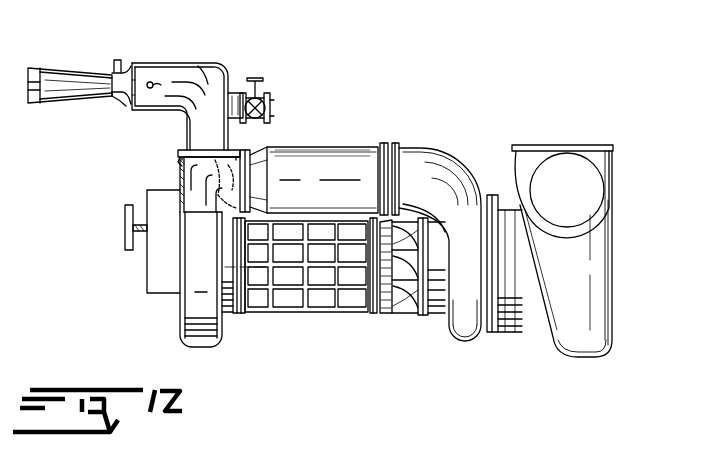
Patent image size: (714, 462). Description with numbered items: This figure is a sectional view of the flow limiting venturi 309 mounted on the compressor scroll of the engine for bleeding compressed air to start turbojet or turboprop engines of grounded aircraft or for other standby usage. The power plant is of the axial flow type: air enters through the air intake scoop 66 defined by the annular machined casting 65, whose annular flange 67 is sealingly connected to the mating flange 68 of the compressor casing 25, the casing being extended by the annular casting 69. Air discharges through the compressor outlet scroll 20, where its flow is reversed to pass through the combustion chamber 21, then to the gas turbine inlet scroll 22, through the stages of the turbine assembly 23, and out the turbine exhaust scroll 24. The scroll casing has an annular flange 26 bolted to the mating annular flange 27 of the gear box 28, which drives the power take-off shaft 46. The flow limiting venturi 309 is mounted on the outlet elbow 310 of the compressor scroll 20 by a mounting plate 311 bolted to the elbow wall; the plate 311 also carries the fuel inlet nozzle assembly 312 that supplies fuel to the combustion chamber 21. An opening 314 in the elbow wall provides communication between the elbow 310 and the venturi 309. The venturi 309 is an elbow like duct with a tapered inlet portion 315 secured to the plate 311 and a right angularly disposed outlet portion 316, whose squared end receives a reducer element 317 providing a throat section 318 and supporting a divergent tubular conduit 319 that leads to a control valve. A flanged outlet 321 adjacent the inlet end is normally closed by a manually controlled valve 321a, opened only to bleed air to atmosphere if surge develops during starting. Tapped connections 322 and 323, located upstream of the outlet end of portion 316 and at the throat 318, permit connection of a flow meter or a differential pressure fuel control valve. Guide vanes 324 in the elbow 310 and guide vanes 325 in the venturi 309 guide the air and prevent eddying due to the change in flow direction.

The divergent tubular conduit 319 is at (50, 66).
The tapped connection 323 is at (116, 69).
The throat section 318 is at (112, 104).
The reducer element 317 is at (128, 104).
The outlet portion 316 is at (133, 64).
The flow limiting venturi 309 is at (198, 88).
The guide vanes 325 is at (196, 66).
The tapped connection 322 is at (162, 77).
The fuel inlet nozzle assembly 312 is at (218, 109).
The flanged outlet 321 is at (243, 92).
The manually controlled valve 321a is at (271, 104).
The tapered inlet portion 315 is at (215, 151).
The mounting plate 311 is at (180, 159).
The opening 314 is at (184, 164).
The guide vanes 324 is at (190, 208).
The outlet elbow 310 is at (250, 156).
The combustion chamber 21 is at (335, 152).
The gear box 28 is at (138, 309).
The power take-off shaft 46 is at (126, 240).
The compressor outlet scroll 20 is at (213, 356).
The annular flange 27 is at (238, 318).
The annular flange 26 is at (246, 315).
The compressor casing 25 is at (305, 327).
The mating flange 68 is at (372, 316).
The annular flange 67 is at (386, 318).
The annular machined casting 65 is at (396, 331).
The air intake scoop 66 is at (405, 318).
The annular casting 69 is at (433, 328).
The gas turbine inlet scroll 22 is at (465, 357).
The turbine assembly 23 is at (496, 182).
The turbine exhaust scroll 24 is at (560, 365).